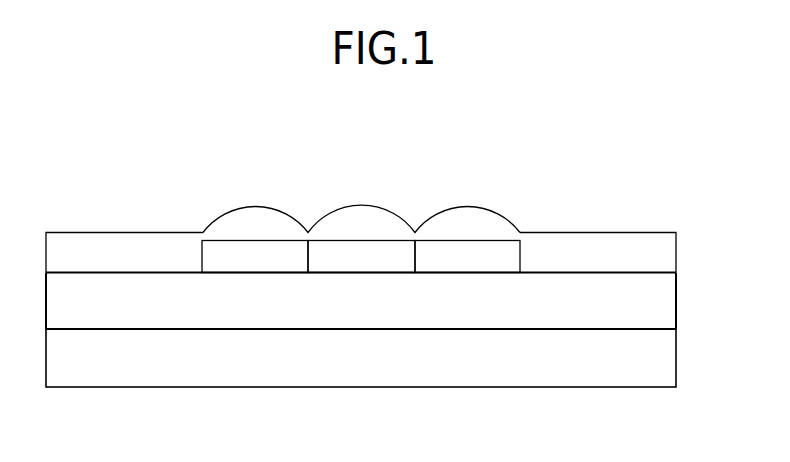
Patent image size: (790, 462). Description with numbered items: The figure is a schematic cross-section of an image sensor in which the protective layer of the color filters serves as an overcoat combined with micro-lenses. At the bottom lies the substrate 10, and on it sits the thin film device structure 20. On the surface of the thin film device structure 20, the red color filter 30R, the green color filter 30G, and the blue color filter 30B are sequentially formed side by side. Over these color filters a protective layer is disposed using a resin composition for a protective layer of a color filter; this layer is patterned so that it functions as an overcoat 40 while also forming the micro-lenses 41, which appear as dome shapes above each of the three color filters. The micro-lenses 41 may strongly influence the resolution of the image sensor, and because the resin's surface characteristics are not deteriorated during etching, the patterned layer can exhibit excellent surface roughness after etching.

The substrate 10 is at (662, 357).
The thin film device structure 20 is at (662, 299).
The red color filter 30R is at (255, 258).
The green color filter 30G is at (361, 258).
The blue color filter 30B is at (467, 258).
The overcoat 40 is at (662, 252).
The micro-lenses 41 is at (274, 208).